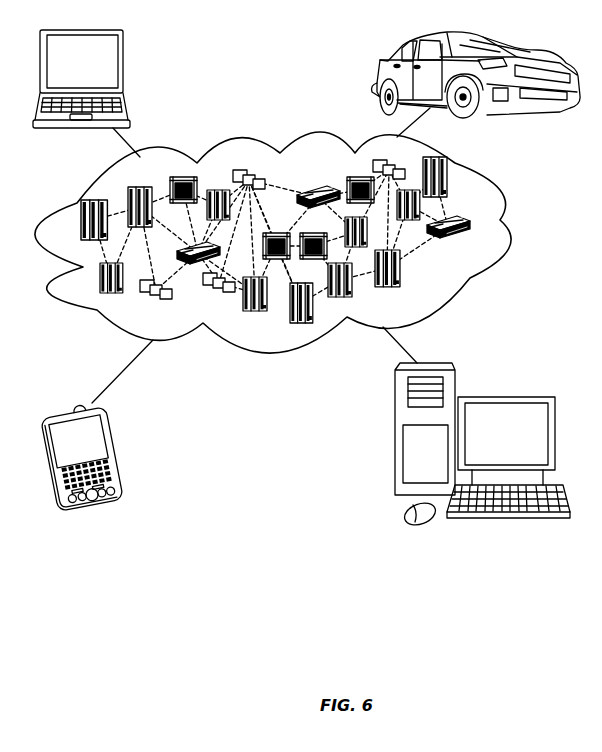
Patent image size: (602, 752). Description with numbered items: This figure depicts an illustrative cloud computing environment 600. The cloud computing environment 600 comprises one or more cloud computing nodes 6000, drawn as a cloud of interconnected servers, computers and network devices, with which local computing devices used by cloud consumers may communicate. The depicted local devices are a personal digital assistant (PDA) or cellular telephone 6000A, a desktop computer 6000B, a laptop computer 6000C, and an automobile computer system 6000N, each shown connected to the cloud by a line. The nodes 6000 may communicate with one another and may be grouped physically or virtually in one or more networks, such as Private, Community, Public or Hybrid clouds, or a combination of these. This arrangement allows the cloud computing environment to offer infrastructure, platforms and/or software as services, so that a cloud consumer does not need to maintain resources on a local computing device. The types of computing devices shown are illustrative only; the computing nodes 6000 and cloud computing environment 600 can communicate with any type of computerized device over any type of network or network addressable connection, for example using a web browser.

The cloud computing environment 600 is at (306, 279).
The cloud computing nodes 6000 is at (505, 225).
The personal digital assistant (PDA) or cellular telephone 6000A is at (115, 450).
The desktop computer 6000B is at (505, 397).
The laptop computer 6000C is at (123, 67).
The automobile computer system 6000N is at (382, 76).